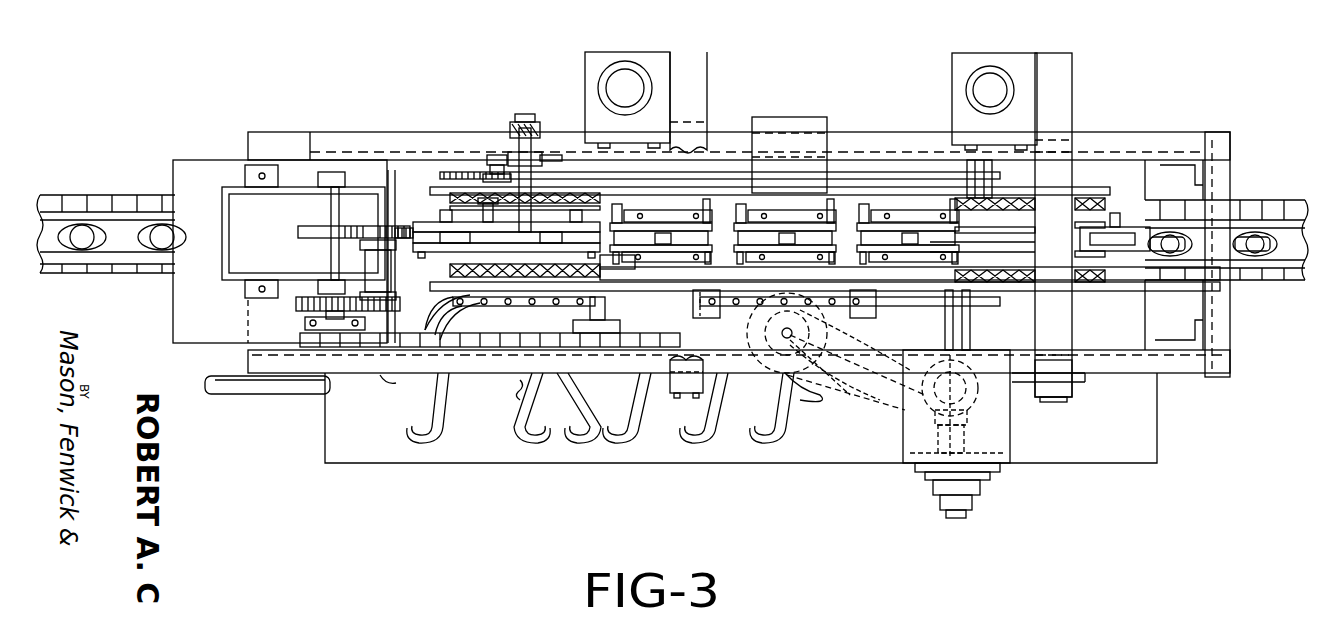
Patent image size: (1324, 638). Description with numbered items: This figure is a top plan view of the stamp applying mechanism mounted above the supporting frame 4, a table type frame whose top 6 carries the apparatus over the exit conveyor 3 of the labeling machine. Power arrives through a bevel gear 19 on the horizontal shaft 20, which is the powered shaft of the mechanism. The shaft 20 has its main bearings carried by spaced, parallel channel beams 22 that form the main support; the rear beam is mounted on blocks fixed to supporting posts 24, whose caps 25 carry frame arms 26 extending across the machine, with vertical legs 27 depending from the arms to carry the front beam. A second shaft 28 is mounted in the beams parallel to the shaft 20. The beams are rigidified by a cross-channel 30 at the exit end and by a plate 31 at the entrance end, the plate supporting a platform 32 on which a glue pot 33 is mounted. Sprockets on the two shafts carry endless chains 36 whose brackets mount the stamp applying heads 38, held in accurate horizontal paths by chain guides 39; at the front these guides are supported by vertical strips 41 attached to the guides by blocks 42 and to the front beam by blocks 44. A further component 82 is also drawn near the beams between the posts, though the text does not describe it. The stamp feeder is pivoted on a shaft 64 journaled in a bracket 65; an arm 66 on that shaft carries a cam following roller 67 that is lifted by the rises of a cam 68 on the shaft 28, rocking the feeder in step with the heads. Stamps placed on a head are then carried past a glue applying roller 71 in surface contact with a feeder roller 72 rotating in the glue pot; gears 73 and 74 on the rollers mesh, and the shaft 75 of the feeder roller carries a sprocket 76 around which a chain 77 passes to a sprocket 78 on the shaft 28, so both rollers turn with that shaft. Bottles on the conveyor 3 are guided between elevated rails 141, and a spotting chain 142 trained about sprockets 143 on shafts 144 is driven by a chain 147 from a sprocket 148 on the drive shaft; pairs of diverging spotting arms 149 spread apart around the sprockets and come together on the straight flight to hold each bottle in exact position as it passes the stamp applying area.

The exit conveyor 3 is at (124, 196).
The supporting frame 4 is at (1170, 410).
The top 6 is at (1160, 446).
The bevel gear 19 is at (1010, 420).
The horizontal shaft 20 is at (972, 325).
The channel beams 22 is at (1142, 136).
The supporting posts 24 is at (628, 80).
The caps 25 is at (604, 62).
The frame arms 26 is at (697, 96).
The vertical legs 27 is at (688, 400).
The second shaft 28 is at (620, 318).
The cross-channel 30 is at (1232, 170).
The plate 31 is at (252, 357).
The platform 32 is at (192, 345).
The glue pot 33 is at (222, 249).
The endless chains 36 is at (990, 200).
The stamp applying heads 38 is at (423, 204).
The chain guides 39 is at (906, 196).
The vertical strips 41 is at (780, 372).
The blocks 42 is at (722, 314).
The blocks 44 is at (712, 375).
The shaft 64 is at (532, 122).
The bracket 65 is at (512, 152).
The arm 66 is at (500, 158).
The cam following roller 67 is at (484, 172).
The cam 68 is at (700, 172).
The glue applying roller 71 is at (372, 232).
The feeder roller 72 is at (308, 224).
The gear 73 is at (388, 276).
The gear 74 is at (296, 302).
The shaft 75 is at (330, 252).
The sprocket 76 is at (314, 345).
The chain 77 is at (544, 408).
The sprocket 78 is at (645, 375).
The control box 82 is at (789, 155).
The guide rails 141 is at (76, 210).
The spotting chain 142 is at (447, 408).
The sprockets 143 is at (455, 318).
The shafts 144 is at (384, 378).
The chain 147 is at (872, 420).
The sprocket 148 is at (905, 425).
The spotting arms 149 is at (512, 306).